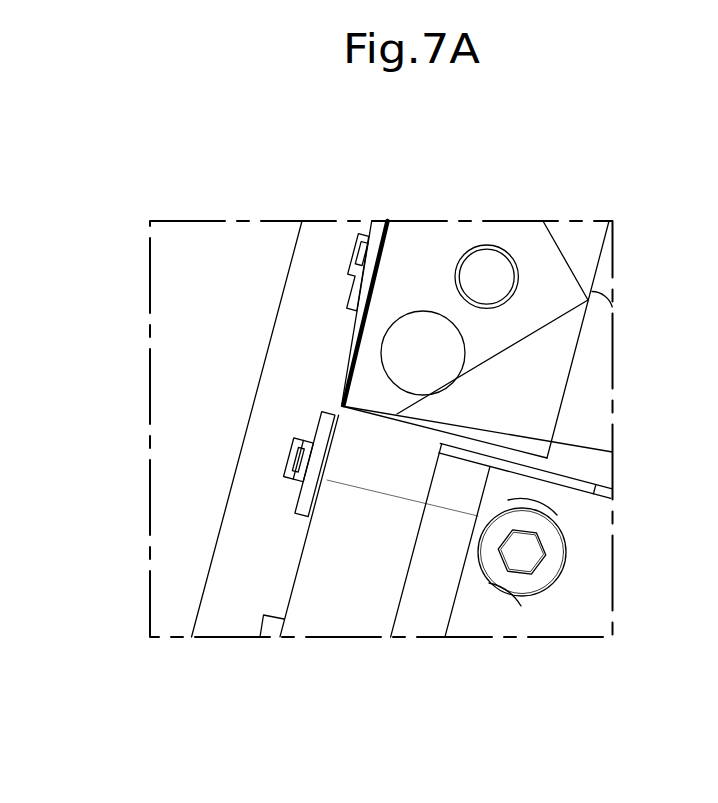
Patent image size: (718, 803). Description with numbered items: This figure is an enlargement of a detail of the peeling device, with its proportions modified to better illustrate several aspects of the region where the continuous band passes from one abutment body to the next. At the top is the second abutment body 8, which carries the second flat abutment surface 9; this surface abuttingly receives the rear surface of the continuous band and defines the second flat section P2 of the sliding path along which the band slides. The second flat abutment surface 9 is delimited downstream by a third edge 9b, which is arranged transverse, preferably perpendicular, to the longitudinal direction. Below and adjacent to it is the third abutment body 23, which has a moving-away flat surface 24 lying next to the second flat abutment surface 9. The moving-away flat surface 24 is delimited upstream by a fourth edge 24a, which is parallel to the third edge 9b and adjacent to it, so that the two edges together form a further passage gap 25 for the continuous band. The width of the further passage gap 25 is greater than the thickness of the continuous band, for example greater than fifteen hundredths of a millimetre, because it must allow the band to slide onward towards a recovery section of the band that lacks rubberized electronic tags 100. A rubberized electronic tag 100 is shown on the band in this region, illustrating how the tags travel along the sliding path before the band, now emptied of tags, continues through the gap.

The second abutment body 8 is at (420, 281).
The second flat abutment surface 9 is at (383, 250).
The third edge 9b is at (342, 405).
The third abutment body 23 is at (358, 573).
The moving-away flat surface 24 is at (300, 555).
The fourth edge 24a is at (341, 416).
The further passage gap 25 is at (374, 423).
The rubberized electronic tag 100 is at (280, 447).
The second flat section P2 is at (344, 338).